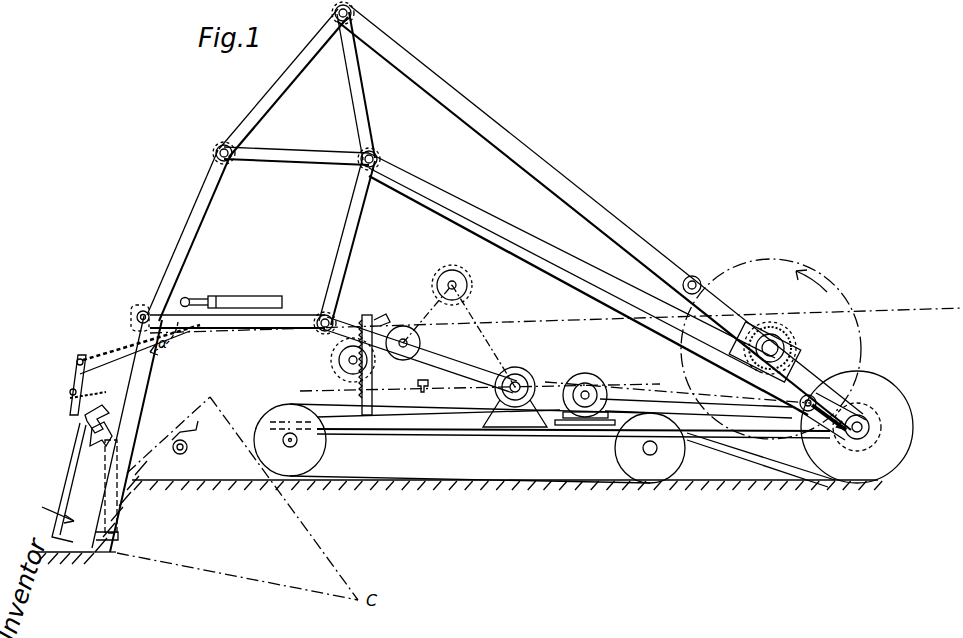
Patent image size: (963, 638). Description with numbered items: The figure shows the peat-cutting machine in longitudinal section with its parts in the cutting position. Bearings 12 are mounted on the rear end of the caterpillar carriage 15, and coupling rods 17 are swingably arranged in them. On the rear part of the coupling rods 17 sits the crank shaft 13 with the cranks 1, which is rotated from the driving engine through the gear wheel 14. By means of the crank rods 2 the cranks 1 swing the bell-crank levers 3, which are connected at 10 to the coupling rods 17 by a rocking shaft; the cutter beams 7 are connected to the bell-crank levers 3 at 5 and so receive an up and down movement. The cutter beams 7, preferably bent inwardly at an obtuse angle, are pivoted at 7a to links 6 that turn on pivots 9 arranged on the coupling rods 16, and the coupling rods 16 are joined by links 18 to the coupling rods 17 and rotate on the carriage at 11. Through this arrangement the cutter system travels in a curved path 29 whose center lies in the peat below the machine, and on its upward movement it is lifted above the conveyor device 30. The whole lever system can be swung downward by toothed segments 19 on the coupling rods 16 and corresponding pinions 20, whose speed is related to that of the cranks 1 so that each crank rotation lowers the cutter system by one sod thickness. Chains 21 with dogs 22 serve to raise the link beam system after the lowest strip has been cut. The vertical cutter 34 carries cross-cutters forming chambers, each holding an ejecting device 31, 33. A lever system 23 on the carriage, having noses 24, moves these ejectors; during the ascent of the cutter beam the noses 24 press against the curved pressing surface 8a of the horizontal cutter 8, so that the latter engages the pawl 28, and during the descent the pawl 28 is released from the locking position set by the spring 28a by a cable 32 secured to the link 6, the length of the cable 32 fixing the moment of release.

The crank 1 is at (733, 318).
The crank rod 2 is at (596, 212).
The bell-crank lever 3 is at (280, 93).
The cutter beam connection 5 is at (216, 152).
The link 6 is at (243, 328).
The cutter beam 7 is at (178, 237).
The cutter beam pivot 7a is at (133, 312).
The horizontal cutter 8 is at (80, 472).
The curved pressing surface 8a is at (96, 436).
The pivot 9 is at (317, 328).
The rocking shaft connection 10 is at (378, 156).
The coupling rod pivot 11 is at (530, 378).
The bearing 12 is at (822, 395).
The crank shaft 13 is at (788, 345).
The gear wheel 14 is at (860, 334).
The caterpillar carriage 15 is at (318, 452).
The coupling rod 16 is at (432, 357).
The coupling rod 17 is at (566, 280).
The link 18 is at (345, 253).
The toothed segment 19 is at (372, 385).
The pinion 20 is at (347, 362).
The chain 21 is at (497, 330).
The dog 22 is at (430, 392).
The lever system 23 is at (250, 296).
The nose 24 is at (190, 296).
The pawl 28 is at (68, 420).
The spring 28a is at (82, 398).
The curved path 29 is at (186, 421).
The conveyor device 30 is at (196, 440).
The ejecting device 31 is at (106, 495).
The cable 32 is at (63, 523).
The ejecting device 33 is at (105, 555).
The vertical cutter 34 is at (116, 546).